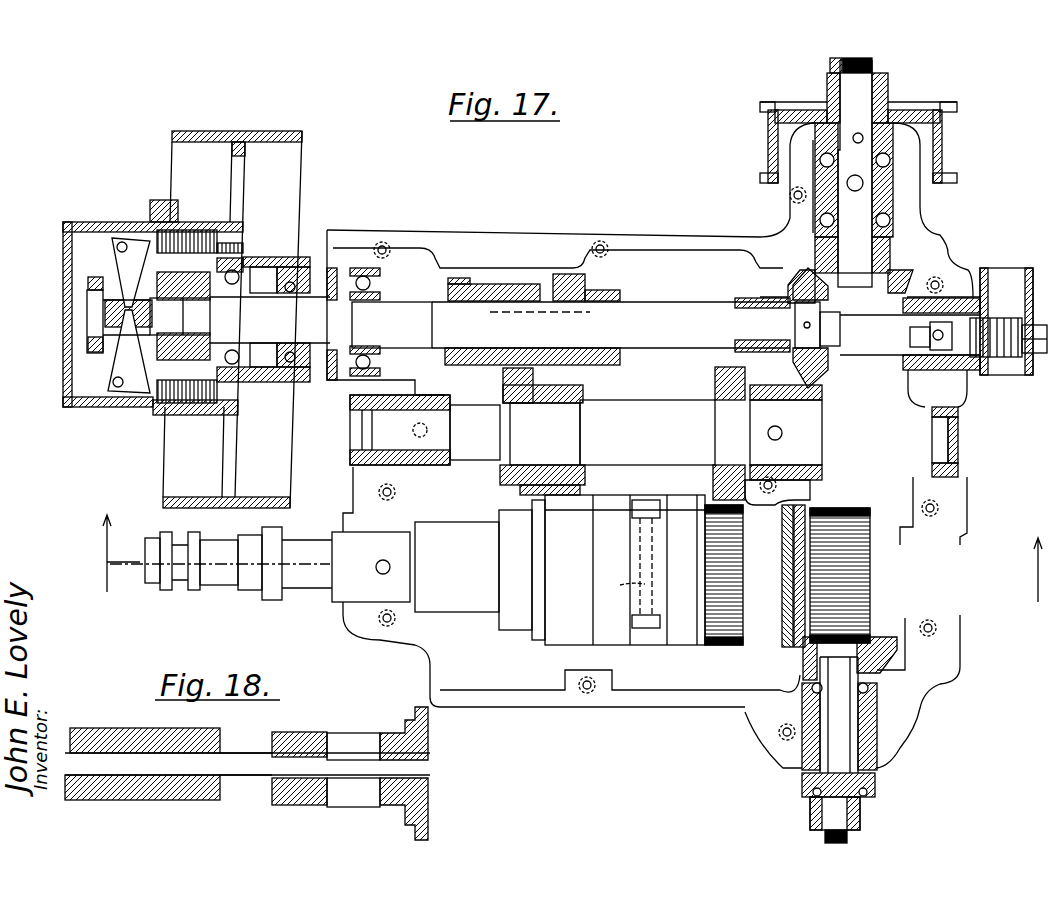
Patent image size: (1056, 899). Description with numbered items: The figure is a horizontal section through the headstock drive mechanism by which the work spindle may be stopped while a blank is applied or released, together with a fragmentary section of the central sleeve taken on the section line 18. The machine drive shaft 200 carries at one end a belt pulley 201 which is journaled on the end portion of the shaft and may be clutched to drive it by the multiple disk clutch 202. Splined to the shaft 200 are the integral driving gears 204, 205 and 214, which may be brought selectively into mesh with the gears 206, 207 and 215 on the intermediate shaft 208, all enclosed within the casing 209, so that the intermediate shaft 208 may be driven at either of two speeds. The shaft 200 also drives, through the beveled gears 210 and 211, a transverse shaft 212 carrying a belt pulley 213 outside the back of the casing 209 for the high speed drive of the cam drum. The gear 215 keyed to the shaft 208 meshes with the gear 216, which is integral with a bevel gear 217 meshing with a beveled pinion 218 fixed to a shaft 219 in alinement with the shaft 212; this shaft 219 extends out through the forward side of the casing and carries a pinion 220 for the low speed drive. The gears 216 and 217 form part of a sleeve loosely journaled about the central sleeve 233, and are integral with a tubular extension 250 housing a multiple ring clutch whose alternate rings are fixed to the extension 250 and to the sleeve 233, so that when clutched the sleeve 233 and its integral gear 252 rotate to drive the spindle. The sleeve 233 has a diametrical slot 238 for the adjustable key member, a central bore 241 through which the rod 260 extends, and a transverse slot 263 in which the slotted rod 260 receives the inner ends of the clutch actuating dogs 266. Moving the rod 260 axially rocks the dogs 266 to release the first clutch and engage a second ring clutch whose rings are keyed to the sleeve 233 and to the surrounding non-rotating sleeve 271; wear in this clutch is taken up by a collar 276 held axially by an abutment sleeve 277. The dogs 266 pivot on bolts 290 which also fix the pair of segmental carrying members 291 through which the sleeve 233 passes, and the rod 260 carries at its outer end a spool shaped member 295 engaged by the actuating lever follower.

In FIG. 17, the section line 18- 18 is at (562, 562).
In FIG. 17, the machine drive shaft 200 is at (699, 321).
In FIG. 17, the belt pulley 201 is at (282, 132).
In FIG. 17, the multiple disk clutch 202 is at (183, 237).
In FIG. 17, the driving gear 204 is at (462, 281).
In FIG. 17, the driving gear 205 is at (590, 282).
In FIG. 17, the gear 206 is at (503, 372).
In FIG. 17, the gear 207 is at (592, 366).
In FIG. 17, the intermediate shaft 208 is at (586, 445).
In FIG. 17, the casing 209 is at (650, 233).
In FIG. 17, the beveled gear 210 is at (803, 380).
In FIG. 17, the beveled gear 211 is at (903, 270).
In FIG. 17, the transverse shaft 212 is at (857, 108).
In FIG. 17, the belt pulley 213 is at (942, 160).
In FIG. 17, the driving gear 214 is at (613, 297).
In FIG. 17, the gear 215 is at (715, 383).
In FIG. 17, the gear 216 is at (723, 647).
In FIG. 17, the bevel gear 217 is at (793, 510).
In FIG. 17, the beveled pinion 218 is at (824, 658).
In FIG. 17, the shaft 219 is at (840, 743).
In FIG. 17, the pinion 220 is at (860, 813).
In FIG. 17, the central sleeve 233 is at (304, 552).
In FIG. 18, the central sleeve 233 is at (297, 743).
In FIG. 18, the slot 238 is at (343, 750).
In FIG. 18, the central bore 241 is at (135, 763).
In FIG. 17, the tubular extension 250 is at (683, 645).
In FIG. 17, the gear 252 is at (852, 523).
In FIG. 17, the rod 260 is at (203, 555).
In FIG. 18, the transverse slot 263 is at (240, 753).
In FIG. 17, the clutch actuating dogs 266 is at (657, 575).
In FIG. 17, the sleeve 271 is at (535, 623).
In FIG. 17, the collar 276 is at (505, 607).
In FIG. 17, the abutment sleeve 277 is at (415, 567).
In FIG. 17, the bolts 290 is at (621, 576).
In FIG. 17, the segmental carrying members 291 is at (660, 502).
In FIG. 17, the spool shaped member 295 is at (182, 590).